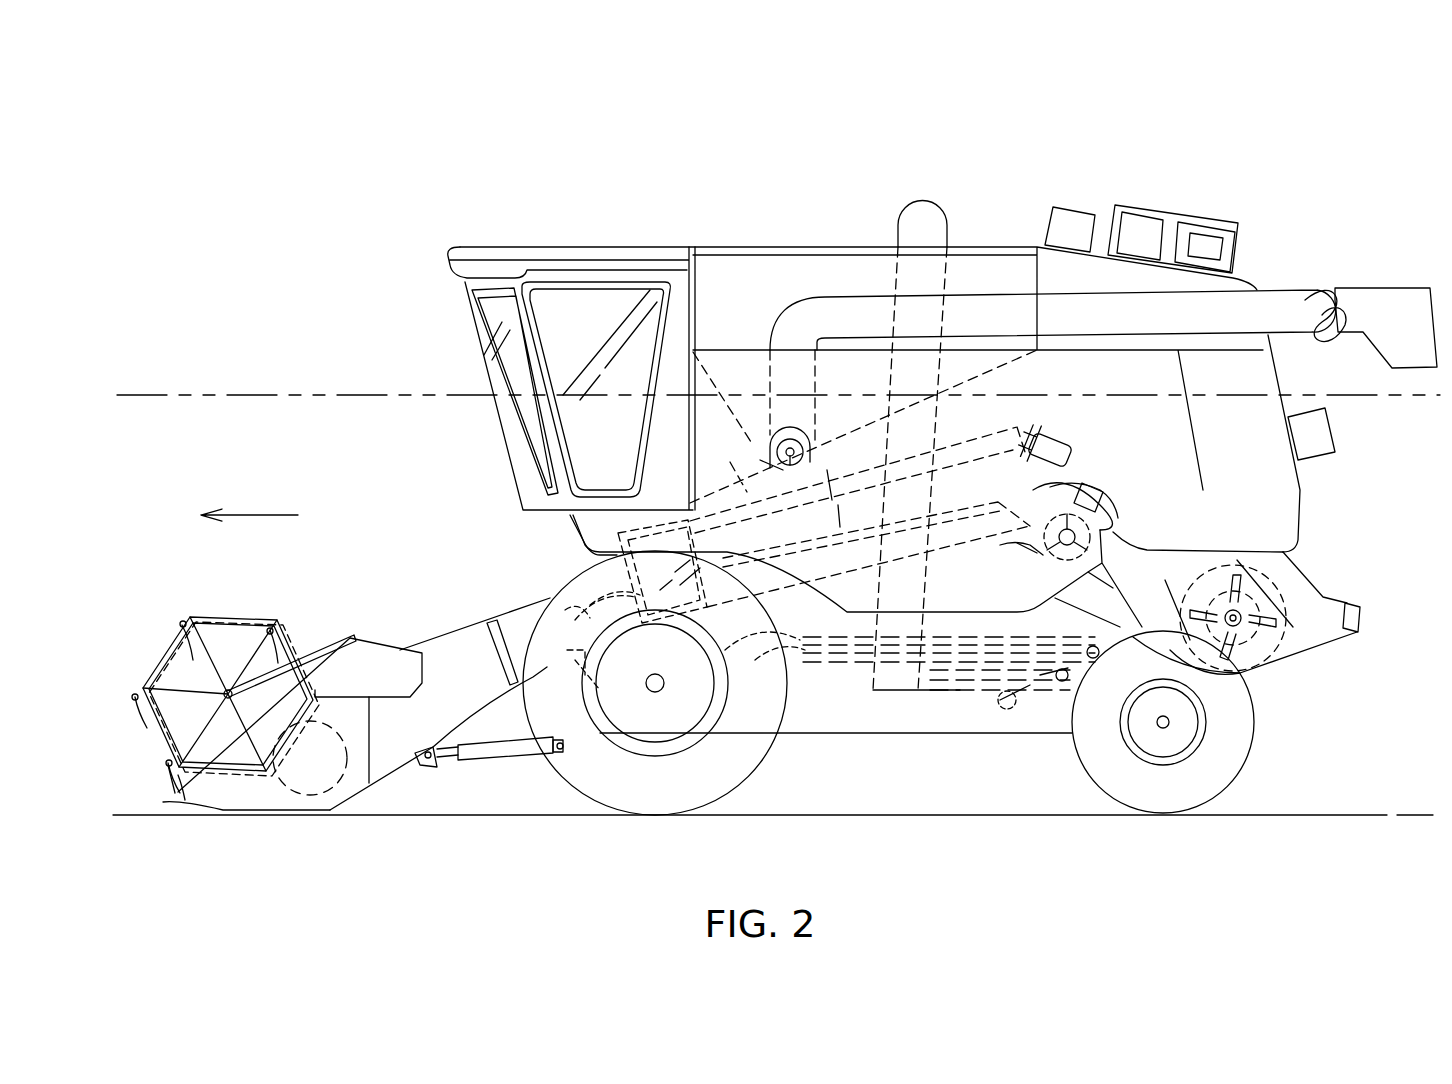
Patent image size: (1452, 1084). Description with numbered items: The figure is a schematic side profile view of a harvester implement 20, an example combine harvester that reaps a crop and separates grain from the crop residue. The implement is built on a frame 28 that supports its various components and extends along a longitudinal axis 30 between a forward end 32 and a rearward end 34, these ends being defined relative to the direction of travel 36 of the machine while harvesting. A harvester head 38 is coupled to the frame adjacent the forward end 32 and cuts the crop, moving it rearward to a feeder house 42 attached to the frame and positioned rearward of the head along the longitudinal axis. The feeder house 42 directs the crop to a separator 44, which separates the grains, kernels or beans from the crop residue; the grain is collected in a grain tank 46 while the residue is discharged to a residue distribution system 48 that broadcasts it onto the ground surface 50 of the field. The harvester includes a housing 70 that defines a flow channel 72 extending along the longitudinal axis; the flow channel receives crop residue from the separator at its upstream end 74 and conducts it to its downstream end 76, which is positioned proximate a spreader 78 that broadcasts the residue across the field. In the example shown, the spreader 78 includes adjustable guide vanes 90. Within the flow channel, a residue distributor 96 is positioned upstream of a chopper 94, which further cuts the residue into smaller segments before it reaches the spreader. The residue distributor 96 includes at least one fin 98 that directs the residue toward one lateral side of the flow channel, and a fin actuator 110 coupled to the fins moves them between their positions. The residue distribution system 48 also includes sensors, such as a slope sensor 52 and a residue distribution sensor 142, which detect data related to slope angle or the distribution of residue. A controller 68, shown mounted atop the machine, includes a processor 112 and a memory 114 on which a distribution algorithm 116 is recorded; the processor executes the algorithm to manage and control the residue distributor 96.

The harvester implement 20 is at (1028, 108).
The frame 28 is at (927, 735).
The longitudinal axis 30 is at (165, 393).
The forward end 32 is at (140, 685).
The rearward end 34 is at (1308, 512).
The direction of travel 36 is at (255, 512).
The harvester head 38 is at (222, 620).
The feeder house 42 is at (445, 650).
The separator 44 is at (863, 426).
The grain tank 46 is at (860, 340).
The residue distribution system 48 is at (1326, 568).
The ground surface 50 is at (1343, 813).
The slope sensor 52 is at (1073, 220).
The controller 68 is at (1155, 232).
The housing 70 is at (1045, 440).
The flow channel 72 is at (1110, 545).
The upstream end 74 is at (1022, 528).
The downstream end 76 is at (1333, 620).
The spreader 78 is at (1330, 603).
The adjustable guide vanes 90 is at (1360, 628).
The chopper 94 is at (1272, 670).
The residue distributor 96 is at (1126, 513).
The fin 98 is at (1073, 490).
The fin actuator 110 is at (1090, 482).
The processor 112 is at (1200, 238).
The memory 114 is at (1210, 245).
The distribution algorithm 116 is at (1210, 250).
The residue distribution sensor 142 is at (1312, 435).